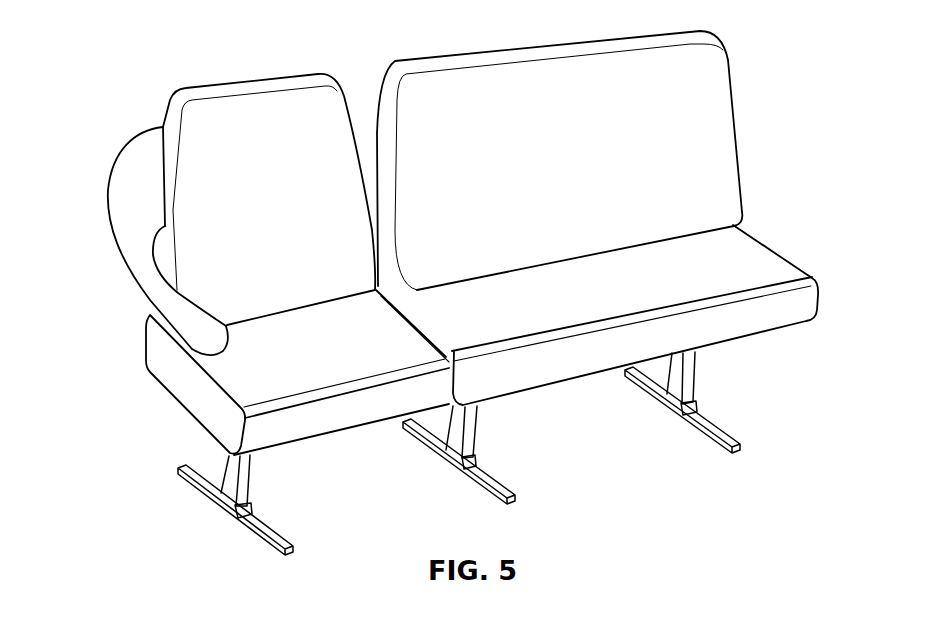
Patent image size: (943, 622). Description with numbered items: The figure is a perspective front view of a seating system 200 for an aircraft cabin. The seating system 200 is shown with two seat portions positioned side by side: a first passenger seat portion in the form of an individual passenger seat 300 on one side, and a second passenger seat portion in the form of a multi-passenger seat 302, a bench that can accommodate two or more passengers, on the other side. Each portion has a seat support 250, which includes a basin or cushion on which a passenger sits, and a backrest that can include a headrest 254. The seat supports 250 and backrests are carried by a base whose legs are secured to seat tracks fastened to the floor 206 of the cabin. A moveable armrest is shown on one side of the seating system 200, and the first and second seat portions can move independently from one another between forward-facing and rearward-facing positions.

The seating system 200 is at (797, 119).
The floor 206 is at (130, 212).
The seat support 250 is at (340, 408).
The headrest 254 is at (240, 81).
The individual passenger seat 300 is at (277, 78).
The multi-passenger seat 302 is at (677, 33).